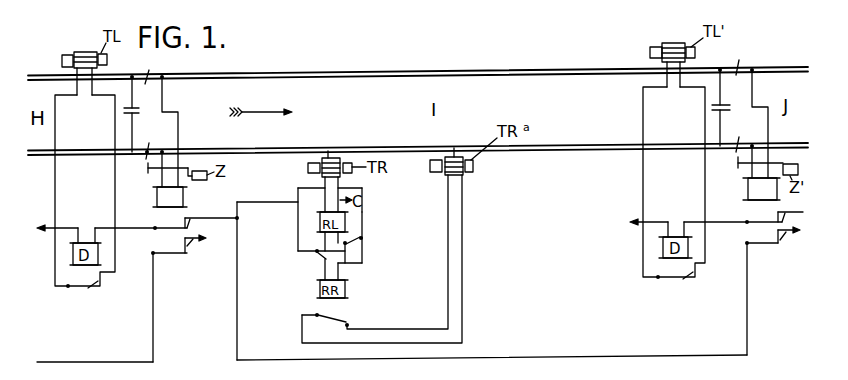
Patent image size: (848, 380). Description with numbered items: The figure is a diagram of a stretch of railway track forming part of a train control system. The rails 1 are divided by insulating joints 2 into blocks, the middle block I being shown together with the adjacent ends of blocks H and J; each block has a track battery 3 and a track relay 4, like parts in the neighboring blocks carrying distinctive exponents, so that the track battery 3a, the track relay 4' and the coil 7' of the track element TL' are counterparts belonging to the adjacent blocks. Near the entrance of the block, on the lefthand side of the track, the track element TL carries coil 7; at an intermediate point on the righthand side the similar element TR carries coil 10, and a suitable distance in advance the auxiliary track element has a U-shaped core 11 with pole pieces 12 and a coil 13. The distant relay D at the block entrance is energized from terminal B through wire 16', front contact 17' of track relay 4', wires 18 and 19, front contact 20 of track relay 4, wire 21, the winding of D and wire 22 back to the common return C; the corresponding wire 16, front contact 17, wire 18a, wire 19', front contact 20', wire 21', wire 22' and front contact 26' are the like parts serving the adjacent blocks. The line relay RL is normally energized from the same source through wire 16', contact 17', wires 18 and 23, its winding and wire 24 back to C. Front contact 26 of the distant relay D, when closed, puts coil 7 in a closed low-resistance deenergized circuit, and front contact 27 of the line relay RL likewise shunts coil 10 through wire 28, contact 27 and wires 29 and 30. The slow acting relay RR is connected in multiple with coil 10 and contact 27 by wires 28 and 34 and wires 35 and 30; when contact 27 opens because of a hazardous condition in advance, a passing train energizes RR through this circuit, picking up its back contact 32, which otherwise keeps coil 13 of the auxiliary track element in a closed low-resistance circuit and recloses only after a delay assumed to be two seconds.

The rails 1 is at (552, 70).
The insulating joints 2 is at (151, 75).
The track battery 3 is at (723, 107).
The track battery 3a is at (140, 114).
The track relay 4 is at (170, 197).
The track relay 4' is at (761, 189).
The coil 7 is at (84, 61).
The coil 7' is at (672, 53).
The coil 10 is at (327, 158).
The U-shaped core 11 is at (462, 176).
The pole pieces 12 is at (474, 167).
The coil 13 is at (452, 159).
The wire 16 is at (201, 250).
The wire 16' is at (796, 244).
The front contact 17 is at (169, 266).
The front contact 17' is at (764, 258).
The wire 18 is at (553, 357).
The wire 18a is at (113, 361).
The wire 19 is at (212, 207).
The wire 19' is at (799, 219).
The front contact 20 is at (173, 235).
The front contact 20' is at (766, 229).
The wire 21 is at (141, 239).
The wire 21' is at (733, 233).
The wire 22 is at (56, 224).
The wire 22' is at (649, 213).
The wire 23 is at (272, 203).
The wire 24 is at (363, 208).
The front contact 26 is at (82, 299).
The front contact 26' is at (674, 287).
The front contact 27 is at (328, 264).
The wire 28 is at (299, 240).
The wire 29 is at (362, 239).
The wire 30 is at (364, 214).
The back contact 32 is at (326, 318).
The wire 34 is at (317, 259).
The wire 35 is at (363, 263).